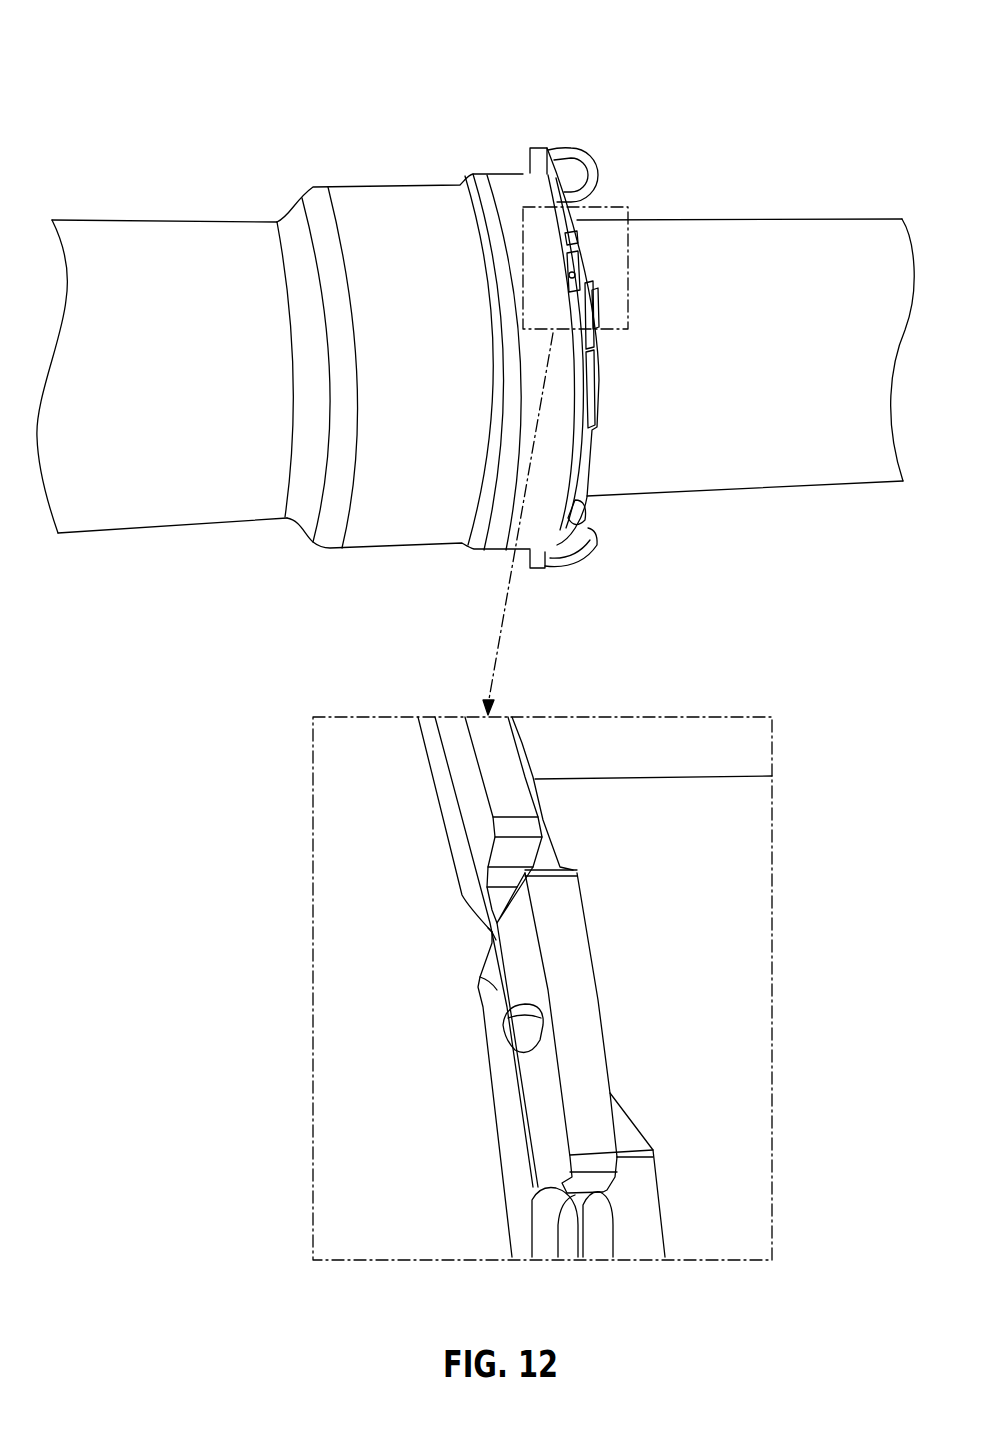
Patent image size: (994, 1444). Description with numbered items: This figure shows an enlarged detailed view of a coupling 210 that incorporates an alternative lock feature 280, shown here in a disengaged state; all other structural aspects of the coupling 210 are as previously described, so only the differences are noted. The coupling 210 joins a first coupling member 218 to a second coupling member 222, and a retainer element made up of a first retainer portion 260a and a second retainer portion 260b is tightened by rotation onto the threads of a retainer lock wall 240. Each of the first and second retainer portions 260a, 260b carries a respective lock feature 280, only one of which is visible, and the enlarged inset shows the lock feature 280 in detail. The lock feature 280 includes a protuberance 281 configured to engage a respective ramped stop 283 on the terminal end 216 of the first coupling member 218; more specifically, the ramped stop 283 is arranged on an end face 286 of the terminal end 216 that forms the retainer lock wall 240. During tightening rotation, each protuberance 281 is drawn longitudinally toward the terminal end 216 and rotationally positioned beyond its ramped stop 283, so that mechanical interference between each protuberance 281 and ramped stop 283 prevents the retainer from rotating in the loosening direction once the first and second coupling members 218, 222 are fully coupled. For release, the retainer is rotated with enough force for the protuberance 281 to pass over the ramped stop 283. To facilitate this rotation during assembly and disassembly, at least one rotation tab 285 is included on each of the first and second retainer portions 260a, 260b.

The coupling 210 is at (563, 110).
The terminal end 216 is at (483, 1055).
The first coupling member 218 is at (507, 183).
The second coupling member 222 is at (723, 233).
The retainer lock wall 240 is at (487, 1198).
The first retainer portion 260a is at (590, 453).
The second retainer portion 260b is at (600, 350).
The lock feature 280 is at (517, 267).
The protuberance 281 is at (530, 1020).
The ramped stop 283 is at (483, 940).
The rotation tab 285 is at (580, 152).
The end face 286 is at (483, 993).